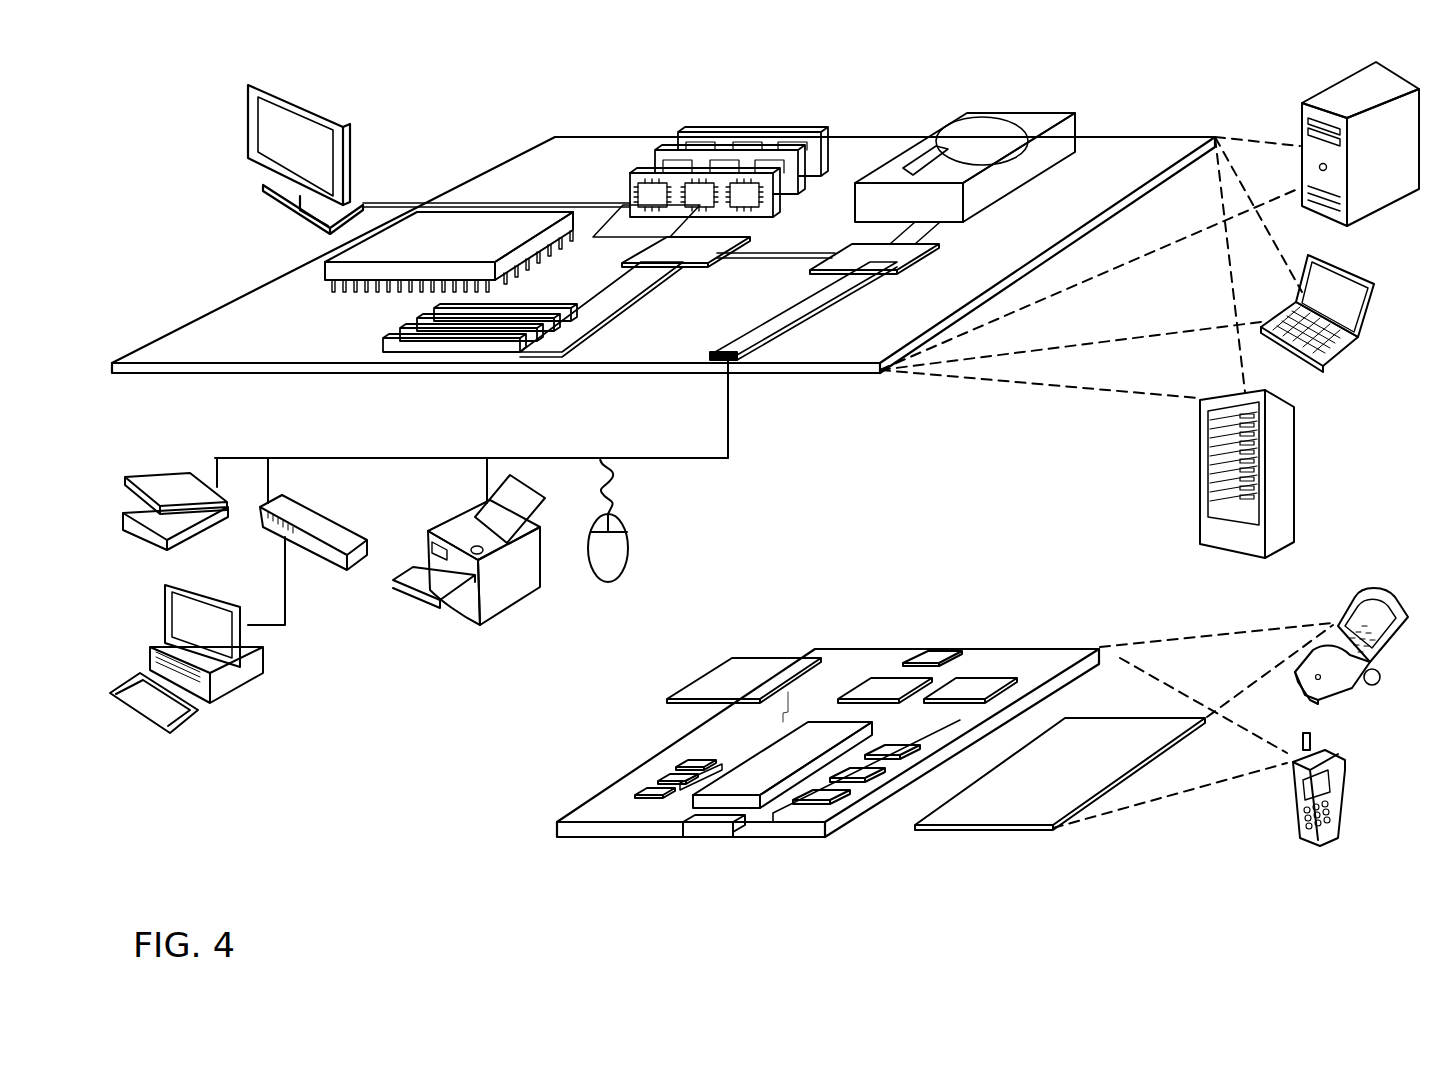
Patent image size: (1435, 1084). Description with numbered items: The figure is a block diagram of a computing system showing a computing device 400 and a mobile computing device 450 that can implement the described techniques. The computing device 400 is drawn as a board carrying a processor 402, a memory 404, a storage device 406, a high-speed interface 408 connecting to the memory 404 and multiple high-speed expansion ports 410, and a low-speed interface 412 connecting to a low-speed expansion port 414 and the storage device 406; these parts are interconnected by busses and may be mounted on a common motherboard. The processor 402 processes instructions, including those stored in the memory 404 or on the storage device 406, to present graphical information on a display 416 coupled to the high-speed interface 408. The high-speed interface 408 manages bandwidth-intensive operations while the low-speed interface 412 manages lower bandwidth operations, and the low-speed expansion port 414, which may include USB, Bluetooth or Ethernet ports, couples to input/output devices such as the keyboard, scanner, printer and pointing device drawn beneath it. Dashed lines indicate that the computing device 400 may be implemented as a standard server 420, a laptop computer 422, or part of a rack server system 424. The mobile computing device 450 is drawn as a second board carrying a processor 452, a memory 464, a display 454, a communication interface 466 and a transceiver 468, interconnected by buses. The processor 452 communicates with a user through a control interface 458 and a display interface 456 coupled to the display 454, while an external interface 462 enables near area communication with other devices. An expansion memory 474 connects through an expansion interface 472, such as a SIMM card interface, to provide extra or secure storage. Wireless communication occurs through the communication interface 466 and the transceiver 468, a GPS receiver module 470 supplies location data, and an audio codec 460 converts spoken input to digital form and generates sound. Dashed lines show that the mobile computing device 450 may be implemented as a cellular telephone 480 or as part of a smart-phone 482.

The computing device 400 is at (470, 110).
The processor 402 is at (330, 268).
The memory 404 is at (700, 130).
The storage device 406 is at (948, 114).
The high-speed interface 408 is at (663, 252).
The high-speed expansion ports 410 is at (408, 333).
The low-speed interface 412 is at (850, 252).
The low-speed expansion port 414 is at (740, 373).
The display 416 is at (250, 82).
The standard server 420 is at (1300, 119).
The laptop computer 422 is at (1323, 368).
The rack server system 424 is at (1200, 498).
The mobile computing device 450 is at (533, 828).
The processor 452 is at (750, 790).
The display 454 is at (1015, 809).
The display interface 456 is at (829, 800).
The control interface 458 is at (865, 775).
The audio codec 460 is at (892, 750).
The external interface 462 is at (715, 825).
The memory 464 is at (656, 781).
The communication interface 466 is at (886, 686).
The transceiver 468 is at (973, 686).
The GPS receiver module 470 is at (943, 652).
The expansion interface 472 is at (806, 661).
The expansion memory 474 is at (722, 663).
The cellular telephone 480 is at (1358, 598).
The smart-phone 482 is at (1292, 796).